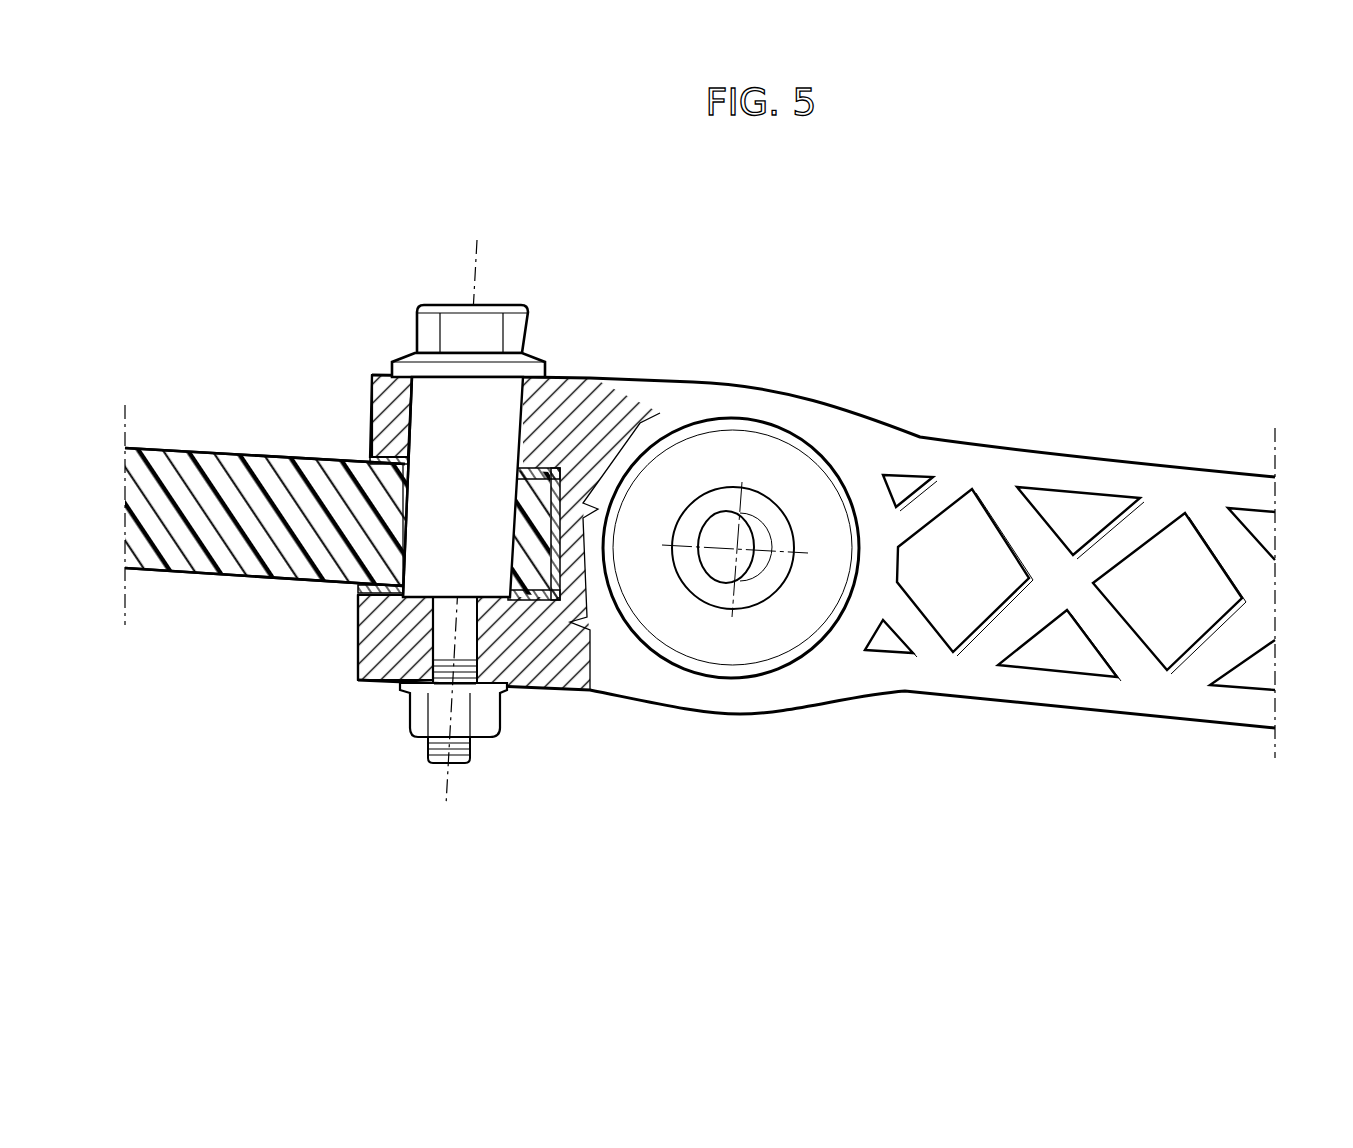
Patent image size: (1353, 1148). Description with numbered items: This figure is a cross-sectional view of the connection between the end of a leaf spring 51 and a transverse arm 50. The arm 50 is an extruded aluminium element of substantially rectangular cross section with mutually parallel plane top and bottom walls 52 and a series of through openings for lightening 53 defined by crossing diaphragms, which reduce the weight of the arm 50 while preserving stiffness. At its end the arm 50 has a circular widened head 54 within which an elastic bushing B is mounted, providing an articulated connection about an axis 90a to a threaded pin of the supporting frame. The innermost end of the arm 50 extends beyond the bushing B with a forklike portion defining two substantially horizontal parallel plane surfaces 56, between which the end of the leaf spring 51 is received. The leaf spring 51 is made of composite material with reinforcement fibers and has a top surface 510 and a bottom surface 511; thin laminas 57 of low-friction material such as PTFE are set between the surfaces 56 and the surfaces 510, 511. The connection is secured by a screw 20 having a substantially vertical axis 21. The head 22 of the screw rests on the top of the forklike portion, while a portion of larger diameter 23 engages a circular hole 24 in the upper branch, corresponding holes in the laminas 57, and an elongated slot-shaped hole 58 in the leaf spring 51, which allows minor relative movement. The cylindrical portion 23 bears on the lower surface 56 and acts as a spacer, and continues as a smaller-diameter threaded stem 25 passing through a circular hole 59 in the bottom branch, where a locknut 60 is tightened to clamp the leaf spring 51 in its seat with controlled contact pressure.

The screw 20 is at (443, 494).
The axis of the screw 21 is at (477, 277).
The head of the screw 22 is at (432, 320).
The portion of larger diameter 23 is at (406, 398).
The circular hole 24 is at (513, 413).
The threaded stem 25 is at (443, 766).
The transverse arm 50 is at (816, 611).
The leaf spring 51 is at (186, 443).
The top surface 510 is at (263, 458).
The bottom surface 511 is at (187, 580).
The top and bottom walls 52 is at (1033, 443).
The through openings for lightening 53 is at (1053, 527).
The widened head 54 is at (800, 392).
The plane surfaces 56 is at (545, 550).
The thin laminas 57 is at (375, 460).
The hole made in the leaf spring 58 is at (393, 530).
The circular hole 59 is at (443, 636).
The locknut 60 is at (500, 722).
The axis 90a is at (733, 547).
The elastic bushing B is at (767, 630).